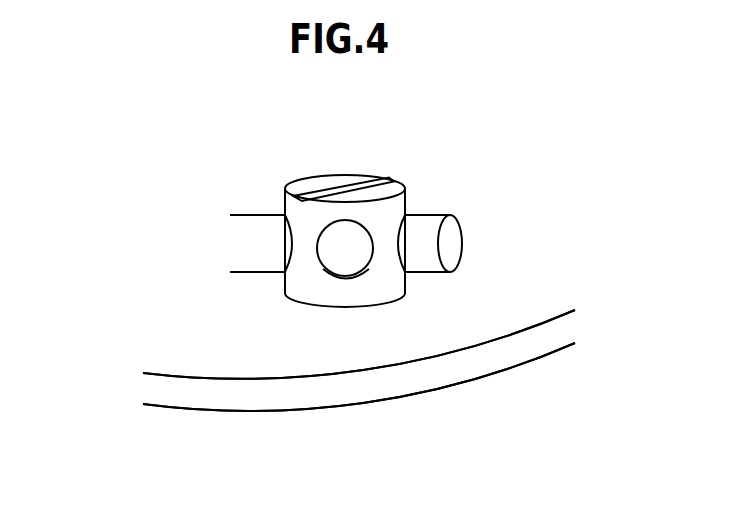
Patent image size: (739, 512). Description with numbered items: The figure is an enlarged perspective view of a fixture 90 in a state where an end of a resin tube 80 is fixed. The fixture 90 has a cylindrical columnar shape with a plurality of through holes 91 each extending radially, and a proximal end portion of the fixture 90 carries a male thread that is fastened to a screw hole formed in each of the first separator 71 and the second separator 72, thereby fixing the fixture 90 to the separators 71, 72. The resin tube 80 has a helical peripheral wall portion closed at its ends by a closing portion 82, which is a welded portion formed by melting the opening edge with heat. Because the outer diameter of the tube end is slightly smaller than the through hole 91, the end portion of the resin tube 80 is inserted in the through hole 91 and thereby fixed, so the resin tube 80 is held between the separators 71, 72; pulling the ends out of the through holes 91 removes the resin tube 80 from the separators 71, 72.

The resin tube 80 is at (240, 200).
The fixture 90 is at (340, 174).
The through hole 91 is at (400, 243).
The closing portion 82 is at (462, 243).
The first separator 71 is at (450, 387).
The second separator 72 is at (359, 360).